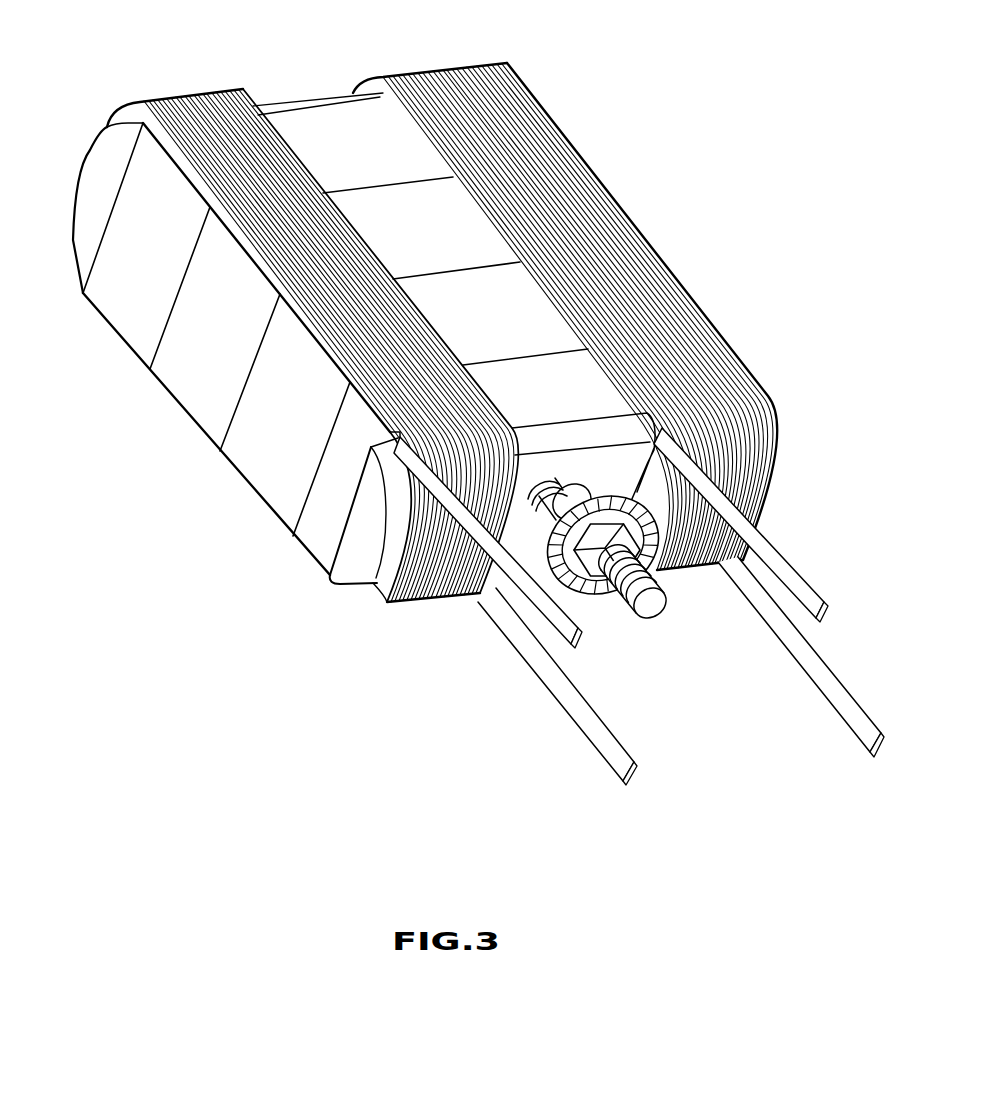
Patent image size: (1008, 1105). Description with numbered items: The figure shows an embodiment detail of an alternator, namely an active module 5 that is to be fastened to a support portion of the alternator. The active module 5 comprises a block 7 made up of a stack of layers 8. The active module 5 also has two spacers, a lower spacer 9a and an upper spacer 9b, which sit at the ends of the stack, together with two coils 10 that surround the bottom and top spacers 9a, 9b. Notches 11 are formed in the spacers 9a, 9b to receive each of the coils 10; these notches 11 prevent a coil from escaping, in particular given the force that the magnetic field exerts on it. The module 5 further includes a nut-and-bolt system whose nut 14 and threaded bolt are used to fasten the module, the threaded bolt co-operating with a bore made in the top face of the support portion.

The active module 5 is at (630, 222).
The block 7 is at (248, 484).
The layers 8 is at (122, 330).
The lower spacer 9a is at (332, 585).
The upper spacer 9b is at (86, 196).
The coils 10 is at (188, 94).
The notches 11 is at (384, 598).
The nut of the nut-and-bolt system 14 is at (660, 560).